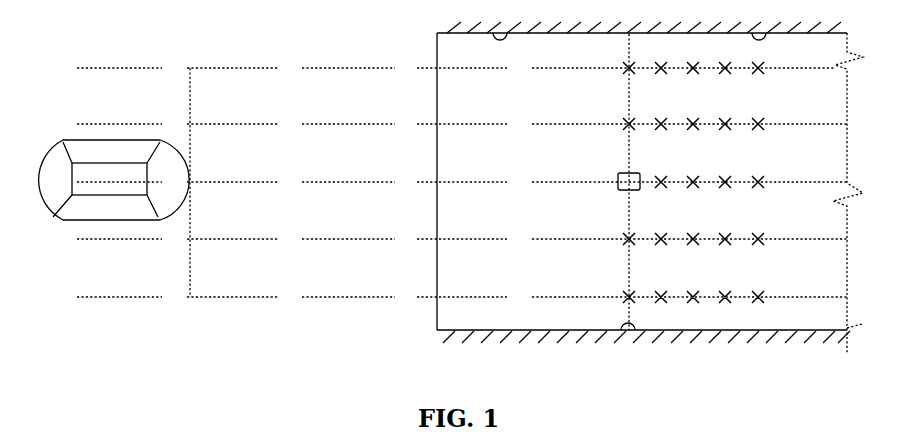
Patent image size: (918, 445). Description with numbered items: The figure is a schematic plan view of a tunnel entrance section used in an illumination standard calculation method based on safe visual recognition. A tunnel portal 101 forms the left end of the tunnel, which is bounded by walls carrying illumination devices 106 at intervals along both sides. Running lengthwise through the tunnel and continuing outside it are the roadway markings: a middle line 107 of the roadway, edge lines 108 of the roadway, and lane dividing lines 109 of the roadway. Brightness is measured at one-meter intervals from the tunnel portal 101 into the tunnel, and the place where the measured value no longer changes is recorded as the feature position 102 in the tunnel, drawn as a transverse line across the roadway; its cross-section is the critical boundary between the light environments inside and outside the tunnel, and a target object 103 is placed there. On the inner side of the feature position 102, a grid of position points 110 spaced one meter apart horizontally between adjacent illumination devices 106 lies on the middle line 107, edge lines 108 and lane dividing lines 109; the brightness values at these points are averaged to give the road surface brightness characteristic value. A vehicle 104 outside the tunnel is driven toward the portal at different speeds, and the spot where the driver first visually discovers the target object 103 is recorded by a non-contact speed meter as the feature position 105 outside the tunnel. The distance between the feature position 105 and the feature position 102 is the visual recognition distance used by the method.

The tunnel portal 101 is at (437, 143).
The feature position in the tunnel 102 is at (632, 260).
The target object 103 is at (632, 172).
The vehicle 104 is at (97, 140).
The feature position outside the tunnel 105 is at (190, 207).
The illumination device 106 is at (503, 43).
The middle line of the roadway 107 is at (492, 183).
The edge line of the roadway 108 is at (453, 297).
The lane dividing line of the roadway 109 is at (478, 239).
The position point 110 is at (728, 183).